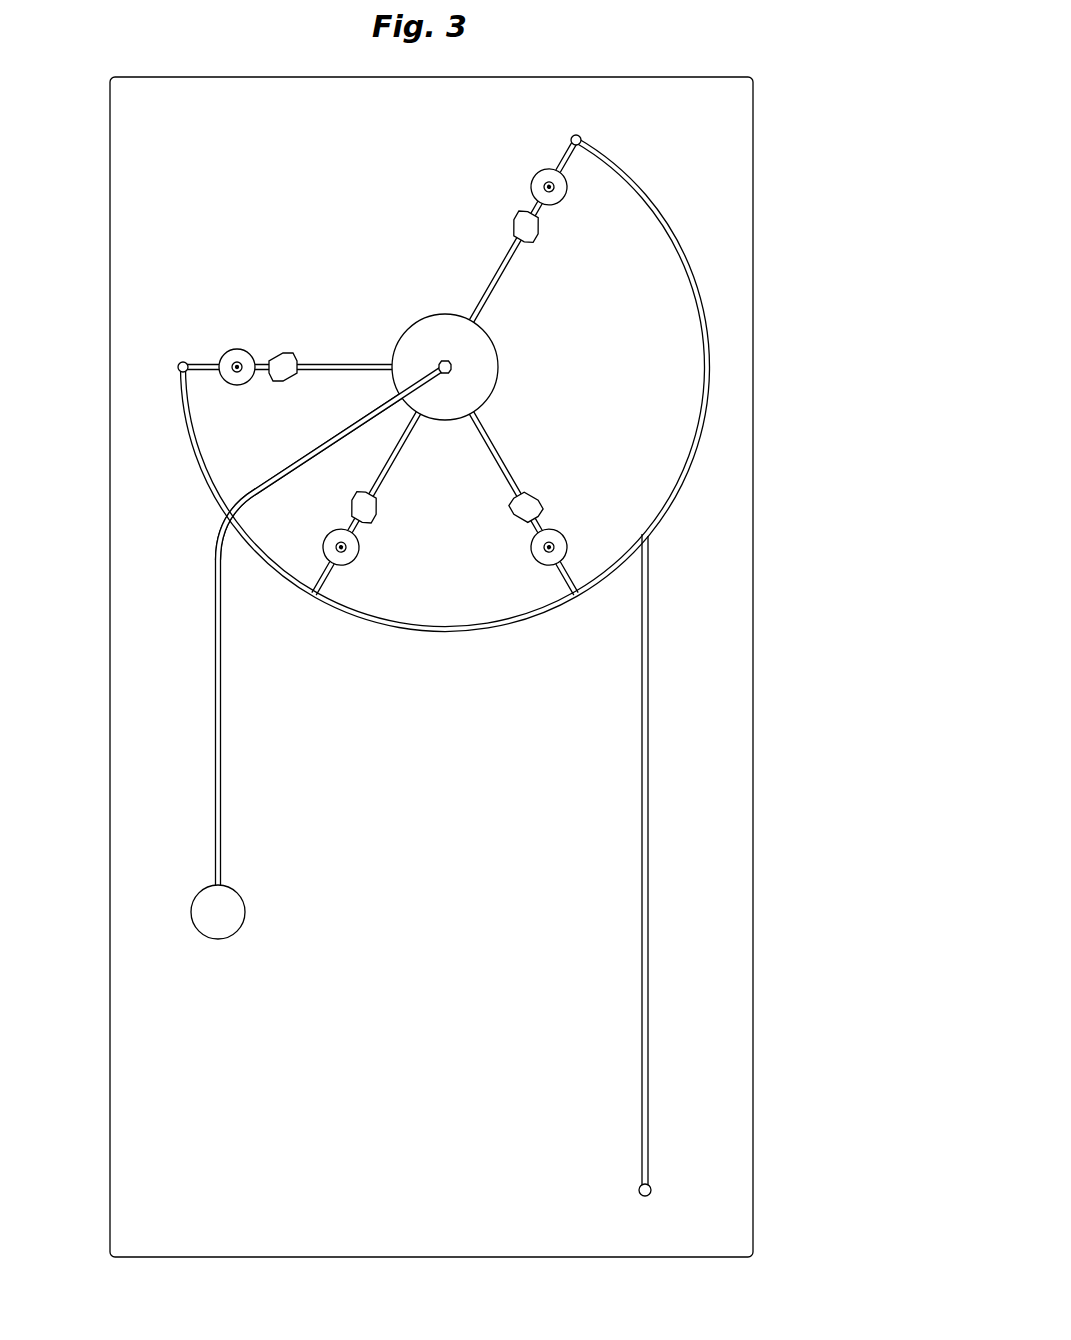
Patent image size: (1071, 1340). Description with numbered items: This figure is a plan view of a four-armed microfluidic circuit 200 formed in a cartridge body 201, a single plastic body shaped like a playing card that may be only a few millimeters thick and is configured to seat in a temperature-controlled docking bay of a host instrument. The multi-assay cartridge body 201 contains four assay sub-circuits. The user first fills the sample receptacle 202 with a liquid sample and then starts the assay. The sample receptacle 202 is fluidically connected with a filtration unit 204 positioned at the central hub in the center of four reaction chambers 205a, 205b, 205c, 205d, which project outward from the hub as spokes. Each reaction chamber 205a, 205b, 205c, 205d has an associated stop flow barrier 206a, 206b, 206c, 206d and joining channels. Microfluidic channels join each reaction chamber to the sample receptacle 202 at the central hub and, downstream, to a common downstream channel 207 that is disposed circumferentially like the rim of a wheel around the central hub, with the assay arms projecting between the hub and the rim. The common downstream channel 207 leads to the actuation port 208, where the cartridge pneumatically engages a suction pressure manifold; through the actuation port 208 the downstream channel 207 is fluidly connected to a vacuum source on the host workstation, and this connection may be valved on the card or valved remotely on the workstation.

The four-armed microfluidic circuit 200 is at (430, 632).
The cartridge body 201 is at (641, 70).
The sample receptacle 202 is at (198, 938).
The filtration unit 204 is at (428, 311).
The reaction chamber 205a is at (540, 243).
The reaction chamber 205b is at (540, 496).
The reaction chamber 205c is at (382, 518).
The reaction chamber 205d is at (283, 351).
The stop flow barrier 206a is at (531, 183).
The stop flow barrier 206b is at (567, 537).
The stop flow barrier 206c is at (363, 561).
The stop flow barrier 206d is at (232, 351).
The common downstream channel 207 is at (524, 636).
The actuation port 208 is at (658, 1188).